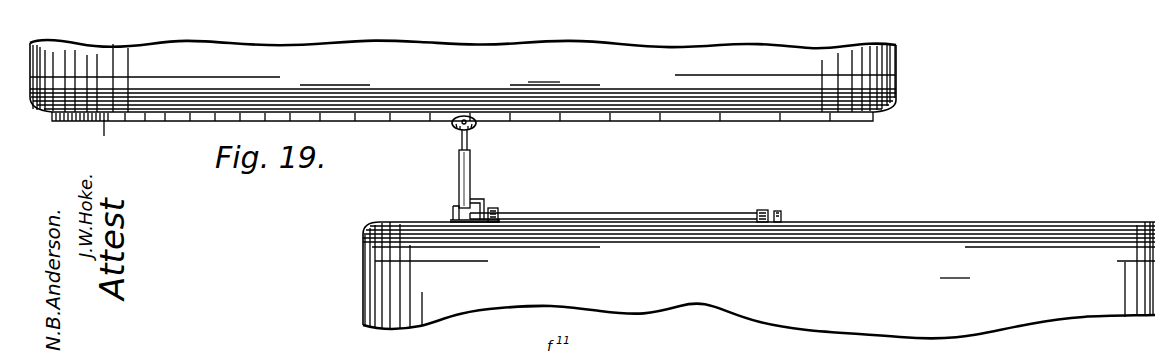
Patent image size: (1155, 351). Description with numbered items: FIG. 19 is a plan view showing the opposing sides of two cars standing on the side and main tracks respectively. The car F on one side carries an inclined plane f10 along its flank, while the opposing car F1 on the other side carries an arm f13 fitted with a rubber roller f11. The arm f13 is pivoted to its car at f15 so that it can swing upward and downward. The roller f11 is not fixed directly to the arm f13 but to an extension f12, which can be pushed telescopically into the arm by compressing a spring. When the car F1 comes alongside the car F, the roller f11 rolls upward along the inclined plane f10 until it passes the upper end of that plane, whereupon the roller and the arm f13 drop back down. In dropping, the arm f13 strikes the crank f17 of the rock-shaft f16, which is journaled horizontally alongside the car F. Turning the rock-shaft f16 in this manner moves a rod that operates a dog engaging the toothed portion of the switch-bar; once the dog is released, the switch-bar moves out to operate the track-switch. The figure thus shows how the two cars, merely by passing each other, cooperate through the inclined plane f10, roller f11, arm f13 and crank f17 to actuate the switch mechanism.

The car F is at (463, 92).
The car F1 is at (759, 261).
The inclined plane f10 is at (660, 121).
The rubber roller f11 is at (476, 127).
The extension f12 is at (468, 142).
The arm f13 is at (470, 178).
The pivot f15 is at (451, 215).
The rock-shaft f16 is at (585, 213).
The crank f17 is at (486, 203).